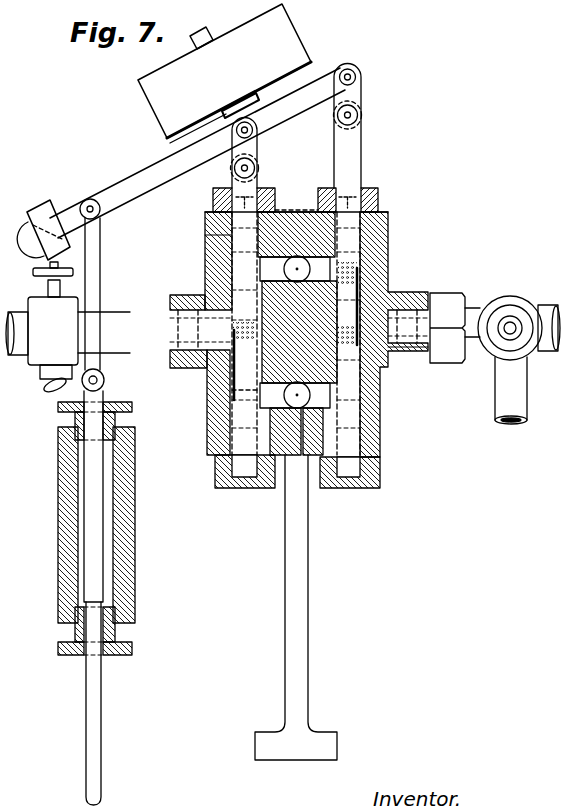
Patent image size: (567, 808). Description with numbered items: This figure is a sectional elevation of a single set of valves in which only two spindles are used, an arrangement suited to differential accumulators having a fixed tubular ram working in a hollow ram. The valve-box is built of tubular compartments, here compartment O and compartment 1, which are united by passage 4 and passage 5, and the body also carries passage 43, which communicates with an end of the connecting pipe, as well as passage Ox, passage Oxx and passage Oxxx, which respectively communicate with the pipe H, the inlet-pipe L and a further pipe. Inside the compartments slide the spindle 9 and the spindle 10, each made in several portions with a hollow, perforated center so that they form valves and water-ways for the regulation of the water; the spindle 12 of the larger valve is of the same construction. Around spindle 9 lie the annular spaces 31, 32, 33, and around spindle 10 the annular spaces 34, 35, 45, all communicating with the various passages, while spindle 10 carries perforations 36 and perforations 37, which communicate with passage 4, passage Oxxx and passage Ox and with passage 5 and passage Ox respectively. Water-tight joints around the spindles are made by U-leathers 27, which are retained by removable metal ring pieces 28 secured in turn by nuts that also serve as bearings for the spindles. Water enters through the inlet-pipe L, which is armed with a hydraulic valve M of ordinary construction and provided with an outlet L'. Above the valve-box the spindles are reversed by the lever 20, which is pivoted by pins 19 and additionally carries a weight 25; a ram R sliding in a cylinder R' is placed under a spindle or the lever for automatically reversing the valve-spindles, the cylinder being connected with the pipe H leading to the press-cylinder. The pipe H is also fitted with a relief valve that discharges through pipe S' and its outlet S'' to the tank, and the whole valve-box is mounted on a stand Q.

The plate weight 25 is at (224, 73).
The lever 20 is at (181, 164).
The pivot pins 19 is at (355, 101).
The spindle 10 is at (354, 147).
The spindle 9 is at (253, 175).
The passage 4 is at (379, 195).
The compartment 1 is at (388, 217).
The U-leathers 27 is at (388, 243).
The removable metal ring pieces 28 is at (373, 267).
The annular space 35 is at (372, 306).
The annular space 34 is at (388, 277).
The perforations 36 is at (390, 288).
The passage 5 is at (340, 398).
The perforations 37 is at (385, 387).
The annular space 45 is at (380, 418).
The passage 43 is at (290, 478).
The spindle 12 is at (217, 415).
The annular space 33 is at (228, 390).
The annular space 31 is at (210, 260).
The annular space 32 is at (203, 305).
The compartment O is at (205, 220).
The passage Ox is at (397, 367).
The passage Oxx is at (222, 390).
The passage Oxxx is at (271, 324).
The hydraulic valve M is at (68, 313).
The inlet-pipe L is at (100, 294).
The outlet L' is at (65, 393).
The cylinder R' is at (75, 528).
The ram R is at (118, 598).
The stand Q is at (288, 608).
The pipe H is at (543, 309).
The pipe S' is at (519, 385).
The tube outlet S'' is at (508, 403).